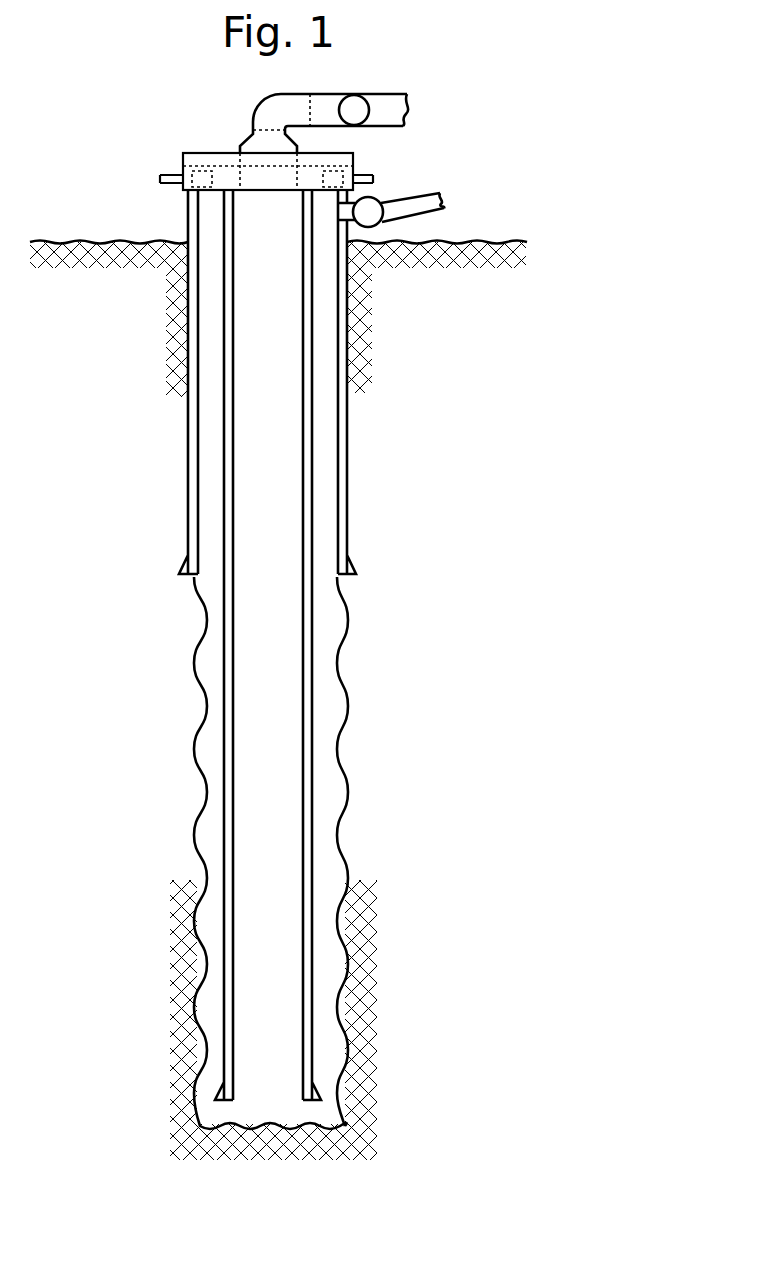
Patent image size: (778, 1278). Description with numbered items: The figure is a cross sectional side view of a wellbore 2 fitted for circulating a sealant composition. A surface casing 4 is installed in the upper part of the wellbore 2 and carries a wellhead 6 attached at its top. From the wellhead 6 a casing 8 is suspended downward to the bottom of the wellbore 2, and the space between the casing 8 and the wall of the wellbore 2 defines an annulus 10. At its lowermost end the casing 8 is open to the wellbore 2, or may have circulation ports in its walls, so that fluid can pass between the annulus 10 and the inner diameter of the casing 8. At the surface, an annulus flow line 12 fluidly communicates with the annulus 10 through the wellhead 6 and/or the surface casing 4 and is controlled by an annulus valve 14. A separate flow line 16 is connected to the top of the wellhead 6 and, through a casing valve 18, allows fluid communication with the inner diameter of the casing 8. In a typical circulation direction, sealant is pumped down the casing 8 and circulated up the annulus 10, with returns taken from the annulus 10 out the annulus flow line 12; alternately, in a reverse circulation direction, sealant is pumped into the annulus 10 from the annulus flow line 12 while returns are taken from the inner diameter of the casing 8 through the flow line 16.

The wellbore 2 is at (349, 623).
The surface casing 4 is at (348, 474).
The wellhead 6 is at (183, 166).
The casing 8 is at (312, 935).
The annulus 10 is at (323, 578).
The annulus flow line 12 is at (424, 207).
The annulus valve 14 is at (380, 200).
The flow line 16 is at (388, 107).
The casing valve 18 is at (354, 110).